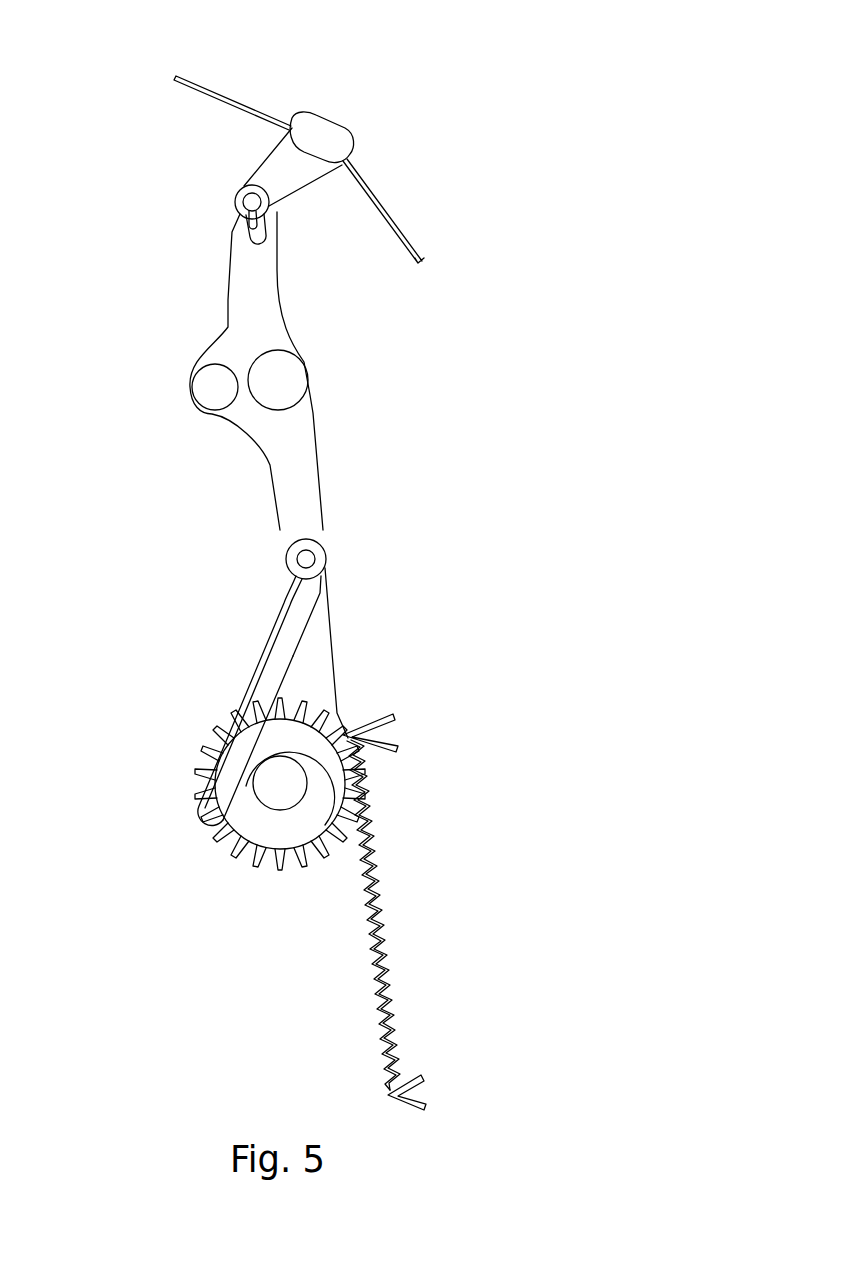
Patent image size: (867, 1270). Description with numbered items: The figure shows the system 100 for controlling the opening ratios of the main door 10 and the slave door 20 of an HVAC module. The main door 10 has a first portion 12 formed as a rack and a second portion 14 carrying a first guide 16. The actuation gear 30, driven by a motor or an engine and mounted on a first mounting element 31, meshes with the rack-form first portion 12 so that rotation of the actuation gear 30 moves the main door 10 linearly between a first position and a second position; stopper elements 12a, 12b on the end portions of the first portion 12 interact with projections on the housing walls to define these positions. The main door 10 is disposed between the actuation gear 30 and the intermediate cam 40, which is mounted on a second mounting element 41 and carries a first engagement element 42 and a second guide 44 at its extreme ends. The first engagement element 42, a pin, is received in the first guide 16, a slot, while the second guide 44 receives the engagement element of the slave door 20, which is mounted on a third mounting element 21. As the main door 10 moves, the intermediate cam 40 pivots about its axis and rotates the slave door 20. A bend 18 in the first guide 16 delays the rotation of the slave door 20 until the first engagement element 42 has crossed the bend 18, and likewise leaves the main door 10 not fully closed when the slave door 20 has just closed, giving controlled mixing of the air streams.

The system for controlling opening ratios 100 is at (580, 115).
The main door 10 is at (315, 668).
The first portion 12 is at (377, 828).
The stopper element 12a is at (393, 717).
The stopper element 12b is at (422, 1078).
The second portion 14 is at (290, 687).
The first guide 16 is at (293, 640).
The bend 18 is at (310, 600).
The slave door 20 is at (372, 180).
The third mounting element 21 is at (318, 140).
The actuation gear 30 is at (265, 828).
The first mounting element 31 is at (285, 790).
The intermediate cam 40 is at (235, 332).
The second mounting element 41 is at (298, 375).
The first engagement element 42 is at (303, 562).
The second guide 44 is at (248, 232).